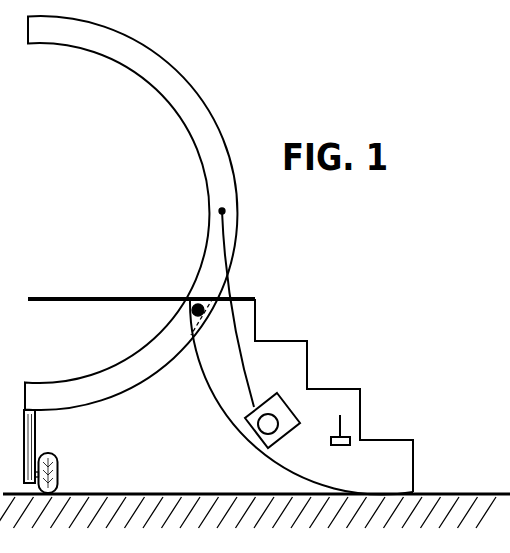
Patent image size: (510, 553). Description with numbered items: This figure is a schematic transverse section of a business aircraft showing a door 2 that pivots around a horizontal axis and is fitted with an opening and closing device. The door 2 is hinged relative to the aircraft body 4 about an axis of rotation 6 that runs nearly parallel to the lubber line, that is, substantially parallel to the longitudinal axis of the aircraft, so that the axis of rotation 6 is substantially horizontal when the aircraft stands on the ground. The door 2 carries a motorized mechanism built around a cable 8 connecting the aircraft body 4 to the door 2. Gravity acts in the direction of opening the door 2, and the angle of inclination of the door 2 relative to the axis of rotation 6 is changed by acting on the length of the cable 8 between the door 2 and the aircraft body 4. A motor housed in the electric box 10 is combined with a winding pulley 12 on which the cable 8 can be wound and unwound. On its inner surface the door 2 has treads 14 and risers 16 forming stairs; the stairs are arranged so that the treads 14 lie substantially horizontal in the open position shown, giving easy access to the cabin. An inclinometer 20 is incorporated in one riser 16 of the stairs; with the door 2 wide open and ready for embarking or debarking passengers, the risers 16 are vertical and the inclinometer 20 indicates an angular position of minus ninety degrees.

The door 2 is at (222, 381).
The aircraft body 4 is at (165, 88).
The axis of rotation 6 is at (194, 303).
The cable 8 is at (235, 282).
The electric box 10 is at (268, 424).
The winding pulley 12 is at (276, 404).
The treads 14 is at (352, 390).
The risers 16 is at (362, 402).
The inclinometer 20 is at (352, 443).